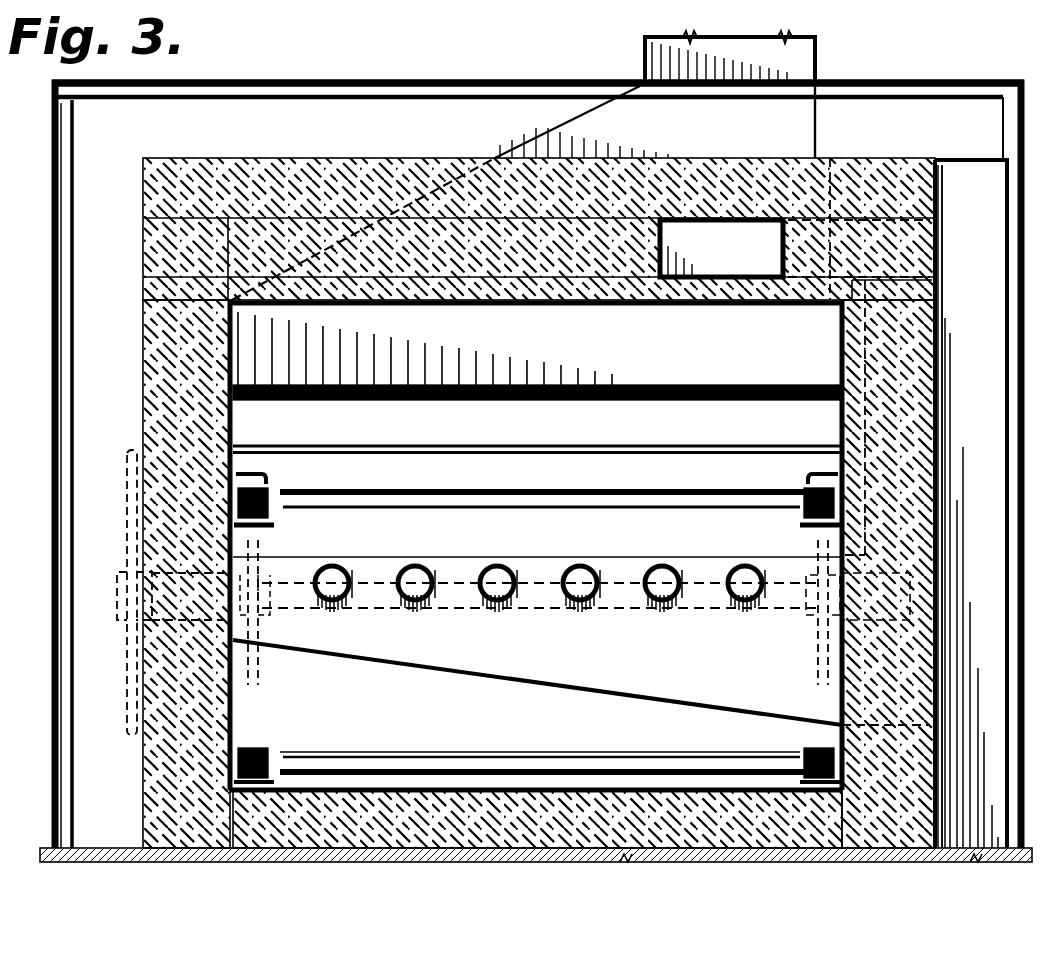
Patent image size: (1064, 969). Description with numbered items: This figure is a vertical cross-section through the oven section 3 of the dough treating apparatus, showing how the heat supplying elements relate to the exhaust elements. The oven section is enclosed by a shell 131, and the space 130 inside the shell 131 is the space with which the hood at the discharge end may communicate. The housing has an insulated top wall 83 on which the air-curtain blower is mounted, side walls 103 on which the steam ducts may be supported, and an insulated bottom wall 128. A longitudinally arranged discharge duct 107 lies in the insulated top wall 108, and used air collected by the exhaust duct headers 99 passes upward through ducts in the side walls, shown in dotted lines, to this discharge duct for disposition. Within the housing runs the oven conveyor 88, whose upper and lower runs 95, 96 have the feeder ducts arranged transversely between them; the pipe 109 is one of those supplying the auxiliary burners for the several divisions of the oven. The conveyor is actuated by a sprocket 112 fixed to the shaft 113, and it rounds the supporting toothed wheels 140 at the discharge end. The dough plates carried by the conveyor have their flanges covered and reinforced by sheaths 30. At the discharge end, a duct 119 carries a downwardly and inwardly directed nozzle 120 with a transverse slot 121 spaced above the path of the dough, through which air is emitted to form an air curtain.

The oven section 3 is at (55, 83).
The shell 131 is at (54, 268).
The space inside the shell 130 is at (462, 58).
The insulated top wall 83 is at (560, 97).
The duct 119 is at (526, 125).
The discharge duct 107 is at (744, 244).
The insulated top wall 108 is at (502, 304).
The nozzle 120 is at (628, 384).
The slot 121 is at (682, 386).
The run of the conveyor 95 is at (650, 492).
The oven conveyor 88 is at (790, 470).
The side walls 103 is at (160, 425).
The shaft 113 is at (374, 584).
The pipe 109 is at (656, 578).
The supporting toothed wheels 140 is at (264, 676).
The sprocket 112 is at (127, 730).
The exhaust duct headers 99 is at (584, 688).
The insulated bottom wall 128 is at (434, 821).
The run of the conveyor 96 is at (692, 735).
The sheaths 30 is at (760, 736).